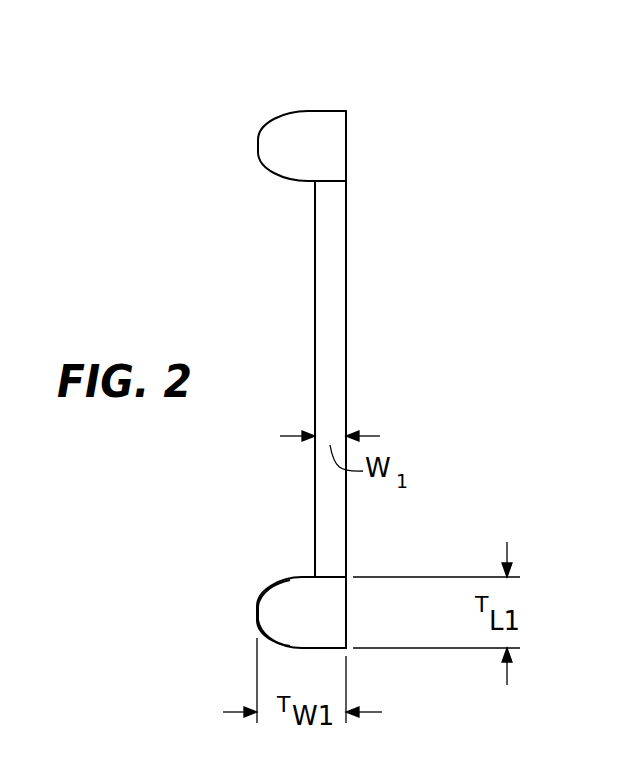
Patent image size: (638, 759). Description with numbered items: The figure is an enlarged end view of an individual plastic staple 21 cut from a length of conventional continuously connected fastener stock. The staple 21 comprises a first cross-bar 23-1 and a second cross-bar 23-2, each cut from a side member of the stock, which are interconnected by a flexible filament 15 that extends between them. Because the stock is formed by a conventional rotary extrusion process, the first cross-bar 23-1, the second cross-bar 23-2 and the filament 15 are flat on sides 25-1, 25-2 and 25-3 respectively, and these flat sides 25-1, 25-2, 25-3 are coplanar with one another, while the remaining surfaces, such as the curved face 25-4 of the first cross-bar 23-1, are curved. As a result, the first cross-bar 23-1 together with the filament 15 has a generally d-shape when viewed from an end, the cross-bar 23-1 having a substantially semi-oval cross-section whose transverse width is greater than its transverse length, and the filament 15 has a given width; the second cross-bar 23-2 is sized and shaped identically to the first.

The plastic staple 21 is at (277, 240).
The flexible filament 15 is at (320, 353).
The first cross-bar 23-1 is at (290, 592).
The second cross-bar 23-2 is at (313, 112).
The flat side of first cross-bar 25-1 is at (347, 614).
The flat side of second cross-bar 25-2 is at (347, 145).
The flat side of filament 25-3 is at (347, 365).
The curved surface of head 25-4 is at (257, 608).